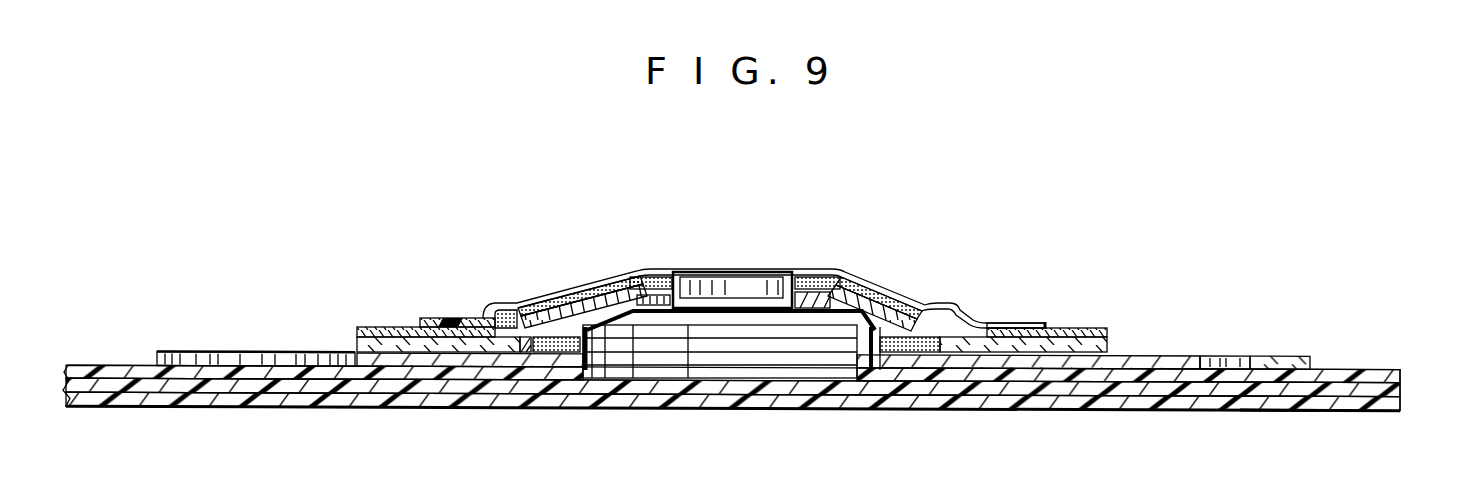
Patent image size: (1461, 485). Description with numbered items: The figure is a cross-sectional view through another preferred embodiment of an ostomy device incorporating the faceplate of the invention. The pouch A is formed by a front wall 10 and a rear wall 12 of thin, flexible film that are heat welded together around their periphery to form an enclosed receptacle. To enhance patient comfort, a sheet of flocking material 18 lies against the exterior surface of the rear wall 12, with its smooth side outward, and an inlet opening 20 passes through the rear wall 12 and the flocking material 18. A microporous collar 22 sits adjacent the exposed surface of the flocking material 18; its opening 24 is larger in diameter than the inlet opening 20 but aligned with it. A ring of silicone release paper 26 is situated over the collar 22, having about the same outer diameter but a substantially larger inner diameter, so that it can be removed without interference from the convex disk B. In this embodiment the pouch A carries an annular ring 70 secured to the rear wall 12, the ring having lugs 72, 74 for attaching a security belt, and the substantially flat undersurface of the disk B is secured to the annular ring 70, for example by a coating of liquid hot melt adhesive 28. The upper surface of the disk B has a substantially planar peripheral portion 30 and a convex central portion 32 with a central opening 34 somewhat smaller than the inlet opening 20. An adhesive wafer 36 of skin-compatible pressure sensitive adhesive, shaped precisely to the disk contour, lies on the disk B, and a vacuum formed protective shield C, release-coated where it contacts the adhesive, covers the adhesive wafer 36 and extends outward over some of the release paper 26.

The front wall 10 is at (1372, 408).
The rear wall 12 is at (1385, 386).
The flocking material 18 is at (1358, 367).
The inlet opening 20 is at (838, 372).
The microporous collar 22 is at (357, 340).
The opening 24 is at (522, 338).
The silicone release paper 26 is at (394, 327).
The liquid hot melt adhesive 28 is at (576, 368).
The planar peripheral portion 30 is at (960, 317).
The convex central portion 32 is at (860, 313).
The central opening 34 is at (808, 303).
The adhesive wafer 36 is at (582, 292).
The annular ring 70 is at (1190, 353).
The lug 72 is at (1297, 352).
The lug 74 is at (170, 351).
The pouch A is at (1278, 416).
The convex disk B is at (900, 305).
The protective shield C is at (1017, 320).